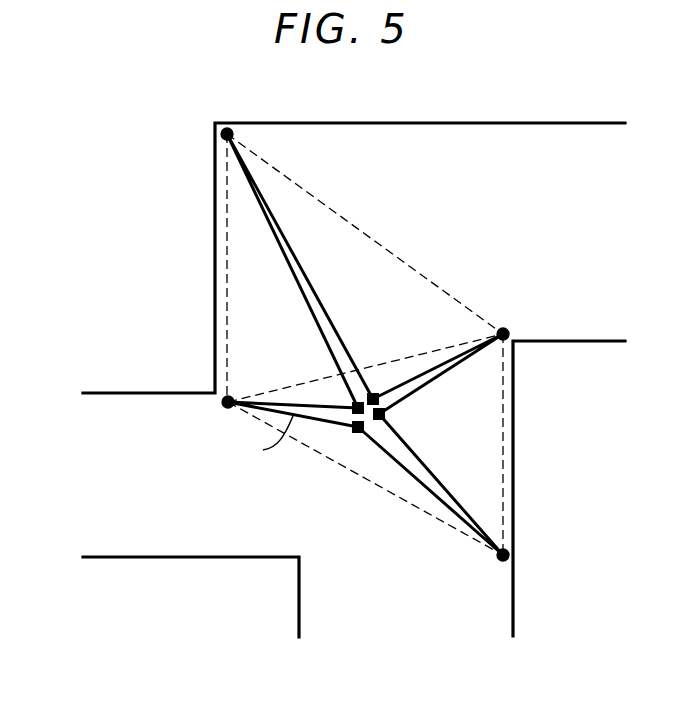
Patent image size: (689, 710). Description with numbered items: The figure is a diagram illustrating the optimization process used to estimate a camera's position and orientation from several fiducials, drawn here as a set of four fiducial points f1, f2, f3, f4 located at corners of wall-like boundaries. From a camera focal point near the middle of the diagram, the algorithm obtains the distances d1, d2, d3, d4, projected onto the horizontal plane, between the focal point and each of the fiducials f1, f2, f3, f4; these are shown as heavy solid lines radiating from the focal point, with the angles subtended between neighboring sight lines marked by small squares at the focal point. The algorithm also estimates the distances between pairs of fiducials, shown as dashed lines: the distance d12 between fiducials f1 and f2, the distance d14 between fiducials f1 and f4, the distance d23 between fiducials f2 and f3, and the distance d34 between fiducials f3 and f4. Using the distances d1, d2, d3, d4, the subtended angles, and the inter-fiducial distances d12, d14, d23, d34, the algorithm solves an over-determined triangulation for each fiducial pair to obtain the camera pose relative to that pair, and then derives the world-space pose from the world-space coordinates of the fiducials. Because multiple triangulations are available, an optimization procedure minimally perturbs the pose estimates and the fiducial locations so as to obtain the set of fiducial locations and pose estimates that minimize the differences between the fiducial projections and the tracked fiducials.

The fiducial f1 is at (225, 115).
The fiducial f2 is at (512, 319).
The fiducial f3 is at (501, 572).
The fiducial f4 is at (222, 415).
The distance d1 is at (300, 271).
The distance d2 is at (438, 374).
The distance d3 is at (430, 484).
The distance d4 is at (293, 436).
The distance between fiducials d12 is at (365, 234).
The distance between fiducials d14 is at (203, 268).
The distance between fiducials d23 is at (530, 444).
The distance between fiducials d34 is at (365, 478).